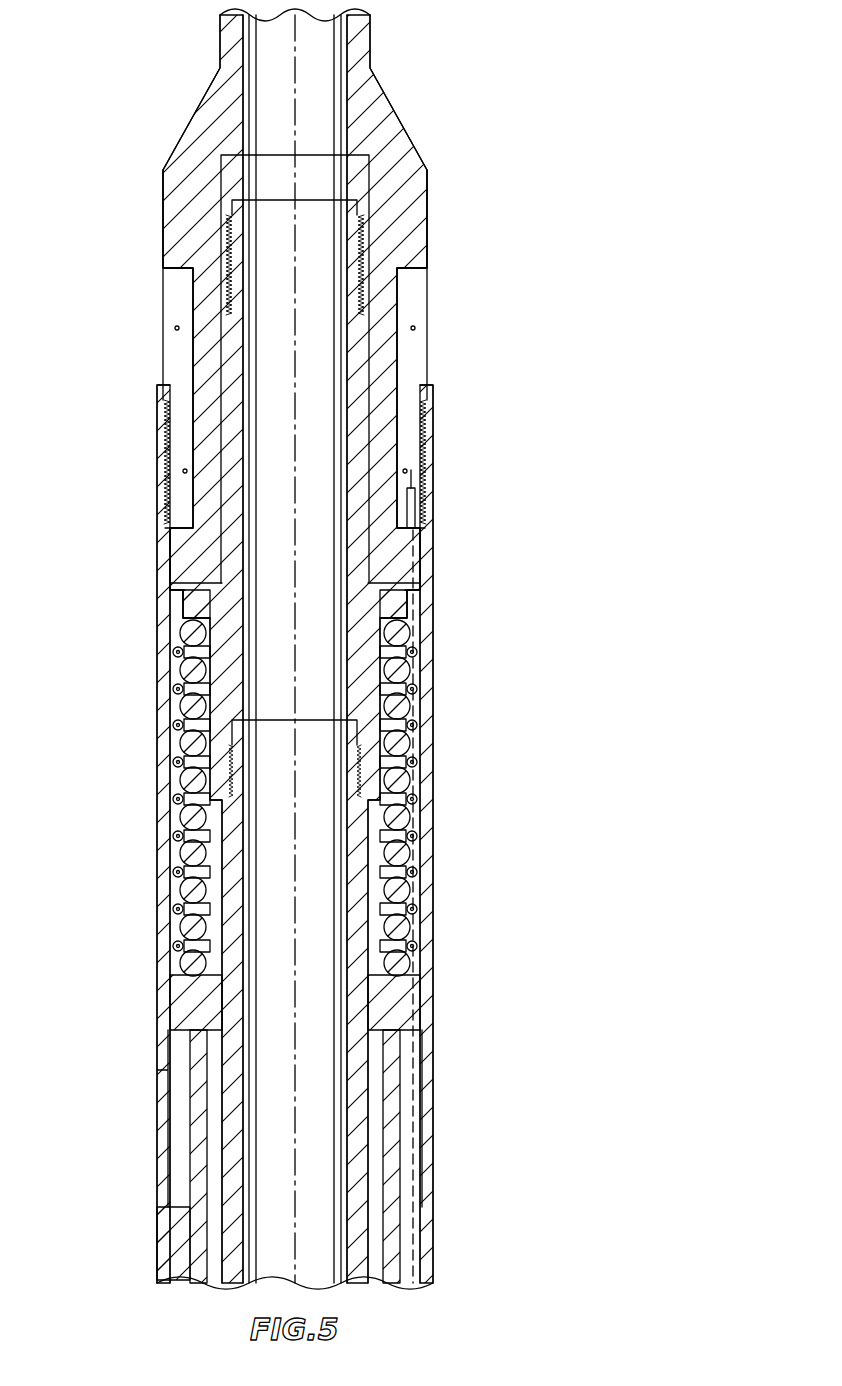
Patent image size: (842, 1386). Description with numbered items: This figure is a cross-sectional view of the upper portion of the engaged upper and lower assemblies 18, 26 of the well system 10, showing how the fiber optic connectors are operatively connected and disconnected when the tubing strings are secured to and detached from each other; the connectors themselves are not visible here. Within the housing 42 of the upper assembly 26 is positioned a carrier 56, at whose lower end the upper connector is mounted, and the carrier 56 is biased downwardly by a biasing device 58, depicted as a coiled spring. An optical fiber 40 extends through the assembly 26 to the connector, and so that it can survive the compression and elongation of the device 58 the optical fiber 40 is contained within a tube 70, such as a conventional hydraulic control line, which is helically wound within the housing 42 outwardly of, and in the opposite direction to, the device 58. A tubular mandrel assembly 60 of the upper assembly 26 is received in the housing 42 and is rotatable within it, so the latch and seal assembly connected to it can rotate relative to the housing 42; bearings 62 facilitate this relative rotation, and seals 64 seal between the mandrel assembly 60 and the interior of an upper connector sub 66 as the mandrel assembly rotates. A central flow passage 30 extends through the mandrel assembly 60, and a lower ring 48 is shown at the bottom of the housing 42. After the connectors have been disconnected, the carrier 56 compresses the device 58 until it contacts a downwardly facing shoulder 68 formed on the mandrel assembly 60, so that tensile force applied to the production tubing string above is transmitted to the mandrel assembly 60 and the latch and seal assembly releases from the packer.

The downhole tool 10 is at (586, 93).
The lower assembly 18 is at (157, 1263).
The upper assembly 26 is at (427, 248).
The flow bore 30 is at (278, 92).
The optical fiber 40 is at (408, 486).
The housing 42 is at (160, 645).
The end ring 48 is at (165, 1235).
The carrier 56 is at (188, 1078).
The biasing device 58 is at (412, 790).
The tubular mandrel assembly 60 is at (370, 1050).
The bearings 62 is at (196, 985).
The seals 64 is at (373, 292).
The upper connector sub 66 is at (162, 248).
The downwardly facing shoulder 68 is at (192, 820).
The tube 70 is at (402, 742).